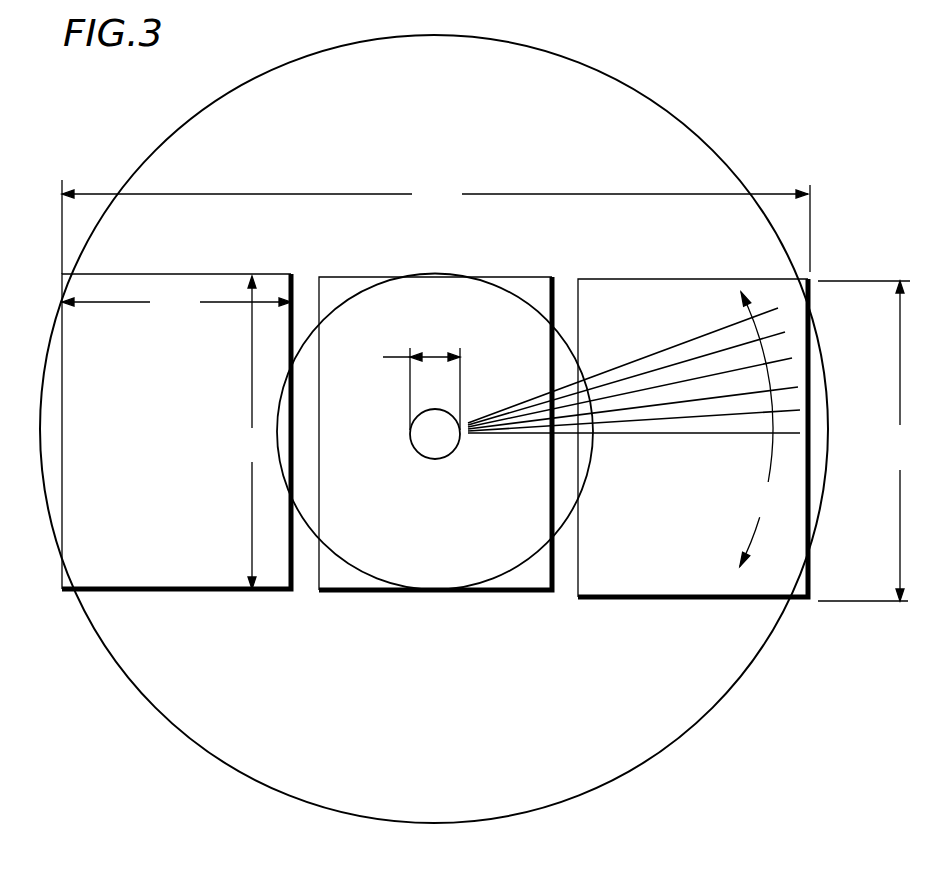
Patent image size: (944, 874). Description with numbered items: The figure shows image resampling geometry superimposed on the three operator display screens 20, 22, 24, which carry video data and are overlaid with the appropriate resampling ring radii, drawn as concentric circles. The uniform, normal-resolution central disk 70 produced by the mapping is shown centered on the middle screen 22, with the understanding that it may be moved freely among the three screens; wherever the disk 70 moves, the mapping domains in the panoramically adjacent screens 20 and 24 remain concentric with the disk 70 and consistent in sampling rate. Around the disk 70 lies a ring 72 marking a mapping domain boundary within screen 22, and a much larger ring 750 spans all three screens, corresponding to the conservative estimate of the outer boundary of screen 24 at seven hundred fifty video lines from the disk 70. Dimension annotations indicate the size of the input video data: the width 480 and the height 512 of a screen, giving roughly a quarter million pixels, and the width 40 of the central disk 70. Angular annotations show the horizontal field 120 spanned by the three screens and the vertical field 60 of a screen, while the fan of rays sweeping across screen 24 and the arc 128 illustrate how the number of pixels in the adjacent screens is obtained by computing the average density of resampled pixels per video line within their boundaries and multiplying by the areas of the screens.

The outer circle (display field / viewing sphere) 750 is at (695, 130).
The inner circle (field of view) 72 is at (510, 573).
The central disk 70 is at (422, 453).
The display screen 20 is at (167, 274).
The display screen 22 is at (517, 277).
The display screen 24 is at (690, 279).
The arc of swept rays 128 is at (765, 429).
The screen width dimension (480 pixels) 480 is at (176, 302).
The screen height dimension (512 pixels) 512 is at (251, 432).
The 120 degree field dimension 120 is at (436, 227).
The 60 degree field dimension 60 is at (871, 441).
The 40 pixel width dimension 40 is at (406, 388).